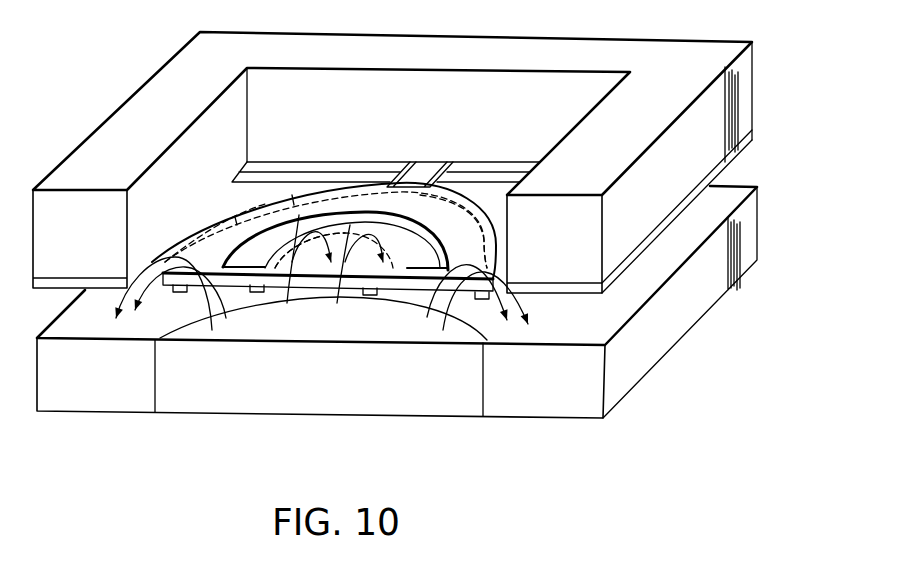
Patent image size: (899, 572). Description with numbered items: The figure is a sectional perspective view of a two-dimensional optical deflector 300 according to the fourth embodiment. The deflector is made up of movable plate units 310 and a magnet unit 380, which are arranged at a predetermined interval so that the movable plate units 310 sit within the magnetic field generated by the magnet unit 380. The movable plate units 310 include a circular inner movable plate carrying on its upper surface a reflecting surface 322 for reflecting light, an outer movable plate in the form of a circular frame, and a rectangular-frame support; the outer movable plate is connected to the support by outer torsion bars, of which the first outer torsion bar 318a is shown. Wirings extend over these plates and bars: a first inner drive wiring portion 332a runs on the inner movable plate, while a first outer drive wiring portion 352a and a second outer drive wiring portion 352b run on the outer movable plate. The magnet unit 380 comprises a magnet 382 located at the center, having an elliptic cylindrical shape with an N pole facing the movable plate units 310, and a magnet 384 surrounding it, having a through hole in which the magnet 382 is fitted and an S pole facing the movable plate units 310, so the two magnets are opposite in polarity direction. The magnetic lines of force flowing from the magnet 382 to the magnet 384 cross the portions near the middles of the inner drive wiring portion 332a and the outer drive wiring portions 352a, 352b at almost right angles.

The two-dimensional optical deflector 300 is at (98, 68).
The movable plate units 310 is at (763, 88).
The first outer torsion bar 318a is at (433, 167).
The reflecting surface 322 is at (350, 225).
The first inner drive wiring portion 332a is at (283, 257).
The first outer drive wiring portion 352a is at (486, 215).
The second outer drive wiring portion 352b is at (238, 218).
The magnet unit 380 is at (768, 216).
The magnet 382 is at (460, 400).
The magnet 384 is at (690, 310).